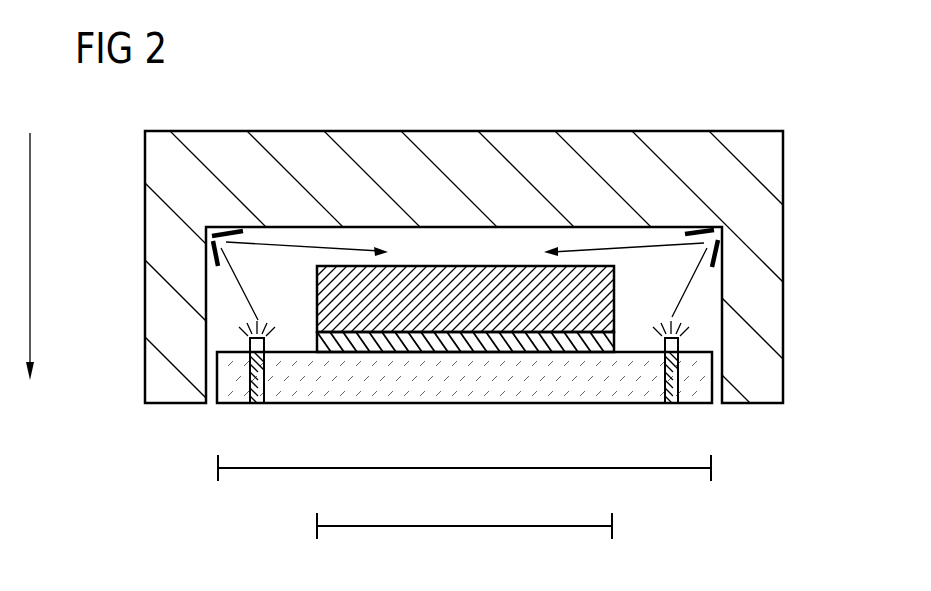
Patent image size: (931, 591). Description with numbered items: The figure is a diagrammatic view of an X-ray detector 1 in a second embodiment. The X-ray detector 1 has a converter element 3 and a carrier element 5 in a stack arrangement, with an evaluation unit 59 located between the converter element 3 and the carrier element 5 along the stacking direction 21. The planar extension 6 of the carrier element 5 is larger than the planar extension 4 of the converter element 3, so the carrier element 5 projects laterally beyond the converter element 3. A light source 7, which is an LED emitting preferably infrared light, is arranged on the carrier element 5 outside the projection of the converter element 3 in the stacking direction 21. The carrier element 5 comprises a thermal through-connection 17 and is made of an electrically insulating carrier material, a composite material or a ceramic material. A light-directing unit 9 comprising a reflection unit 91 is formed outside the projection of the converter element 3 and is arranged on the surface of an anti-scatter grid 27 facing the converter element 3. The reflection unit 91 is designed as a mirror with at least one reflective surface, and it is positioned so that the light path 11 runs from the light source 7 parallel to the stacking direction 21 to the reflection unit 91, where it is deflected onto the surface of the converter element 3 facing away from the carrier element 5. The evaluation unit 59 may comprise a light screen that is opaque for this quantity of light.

The X-ray detector 1 is at (727, 112).
The stacking direction 21 is at (41, 239).
The anti-scatter grid 27 is at (166, 172).
The light-directing unit 9 is at (205, 255).
The reflection unit 91 is at (701, 248).
The light path 11 is at (342, 251).
The converter element 3 is at (327, 292).
The evaluation unit 59 is at (322, 345).
The light source 7 is at (245, 345).
The carrier element 5 is at (227, 377).
The thermal through-connection 17 is at (258, 403).
The planar extension of the carrier element 6 is at (246, 468).
The planar extension of the converter element 4 is at (346, 526).